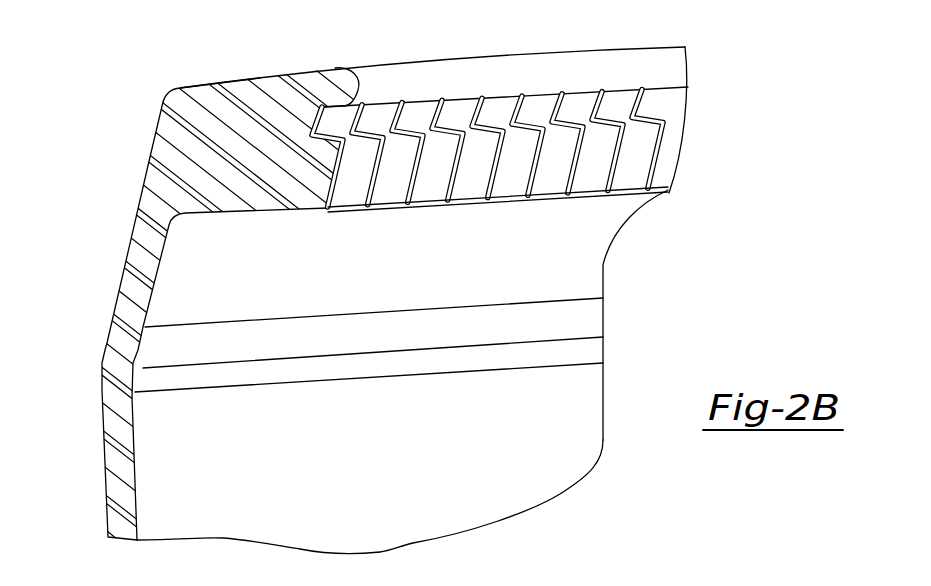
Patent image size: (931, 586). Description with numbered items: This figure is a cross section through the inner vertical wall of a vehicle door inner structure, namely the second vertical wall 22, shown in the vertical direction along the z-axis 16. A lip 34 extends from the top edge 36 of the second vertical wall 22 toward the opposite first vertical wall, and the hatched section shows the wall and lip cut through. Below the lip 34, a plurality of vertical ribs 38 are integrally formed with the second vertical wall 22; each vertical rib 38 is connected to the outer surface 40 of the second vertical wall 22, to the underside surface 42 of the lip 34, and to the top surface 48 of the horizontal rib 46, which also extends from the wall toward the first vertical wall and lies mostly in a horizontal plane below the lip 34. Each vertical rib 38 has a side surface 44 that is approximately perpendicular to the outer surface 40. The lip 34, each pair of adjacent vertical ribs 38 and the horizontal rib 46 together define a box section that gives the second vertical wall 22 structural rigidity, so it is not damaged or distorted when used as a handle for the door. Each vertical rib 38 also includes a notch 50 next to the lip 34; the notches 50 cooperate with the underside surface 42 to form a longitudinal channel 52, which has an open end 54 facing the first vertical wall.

The z-axis 16 is at (370, 513).
The second vertical wall 22 is at (128, 82).
The lip 34 is at (263, 95).
The top edge 36 is at (170, 97).
The vertical ribs 38 is at (518, 176).
The outer surface 40 is at (560, 427).
The underside surface 42 is at (305, 90).
The side surface 44 is at (362, 187).
The horizontal rib 46 is at (330, 210).
The top surface 48 is at (587, 190).
The notch 50 is at (436, 165).
The longitudinal channel 52 is at (665, 108).
The open end 54 is at (542, 107).